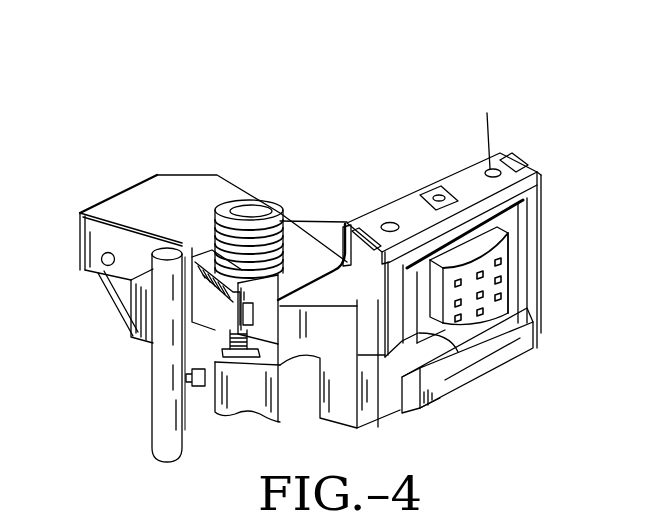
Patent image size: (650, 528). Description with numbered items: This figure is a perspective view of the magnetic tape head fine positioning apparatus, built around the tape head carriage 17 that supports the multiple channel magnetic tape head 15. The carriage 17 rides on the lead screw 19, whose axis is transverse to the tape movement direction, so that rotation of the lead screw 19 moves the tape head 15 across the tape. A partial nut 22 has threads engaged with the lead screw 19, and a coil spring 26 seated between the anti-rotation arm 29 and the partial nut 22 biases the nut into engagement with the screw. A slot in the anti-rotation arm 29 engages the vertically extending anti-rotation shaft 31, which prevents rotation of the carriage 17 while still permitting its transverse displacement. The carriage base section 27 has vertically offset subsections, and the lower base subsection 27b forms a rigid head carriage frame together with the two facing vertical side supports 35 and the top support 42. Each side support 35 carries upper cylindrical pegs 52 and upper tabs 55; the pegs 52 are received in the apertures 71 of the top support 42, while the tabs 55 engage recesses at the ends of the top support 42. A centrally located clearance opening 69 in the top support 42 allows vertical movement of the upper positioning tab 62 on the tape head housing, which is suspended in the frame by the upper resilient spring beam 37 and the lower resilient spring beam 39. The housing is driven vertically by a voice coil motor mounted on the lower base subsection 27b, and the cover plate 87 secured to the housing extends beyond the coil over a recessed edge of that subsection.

The multiple channel magnetic tape head 15 is at (510, 228).
The tape head carriage 17 is at (500, 130).
The lead screw 19 is at (250, 210).
The partial nut 22 is at (203, 256).
The coil spring 26 is at (207, 260).
The base section 27 is at (539, 341).
The lower base subsection 27b is at (496, 350).
The anti-rotation arm 29 is at (96, 272).
The anti-rotation shaft 31 is at (156, 425).
The vertical side supports 35 is at (386, 335).
The upper resilient spring beam 37 is at (540, 203).
The lower resilient spring beam 39 is at (532, 293).
The top support 42 is at (367, 212).
The upper cylindrical pegs 52 is at (386, 223).
The upper tabs 55 is at (344, 224).
The upper positioning tab 62 is at (452, 200).
The clearance opening 69 is at (422, 192).
The apertures 71 is at (394, 223).
The cover plate 87 is at (458, 390).